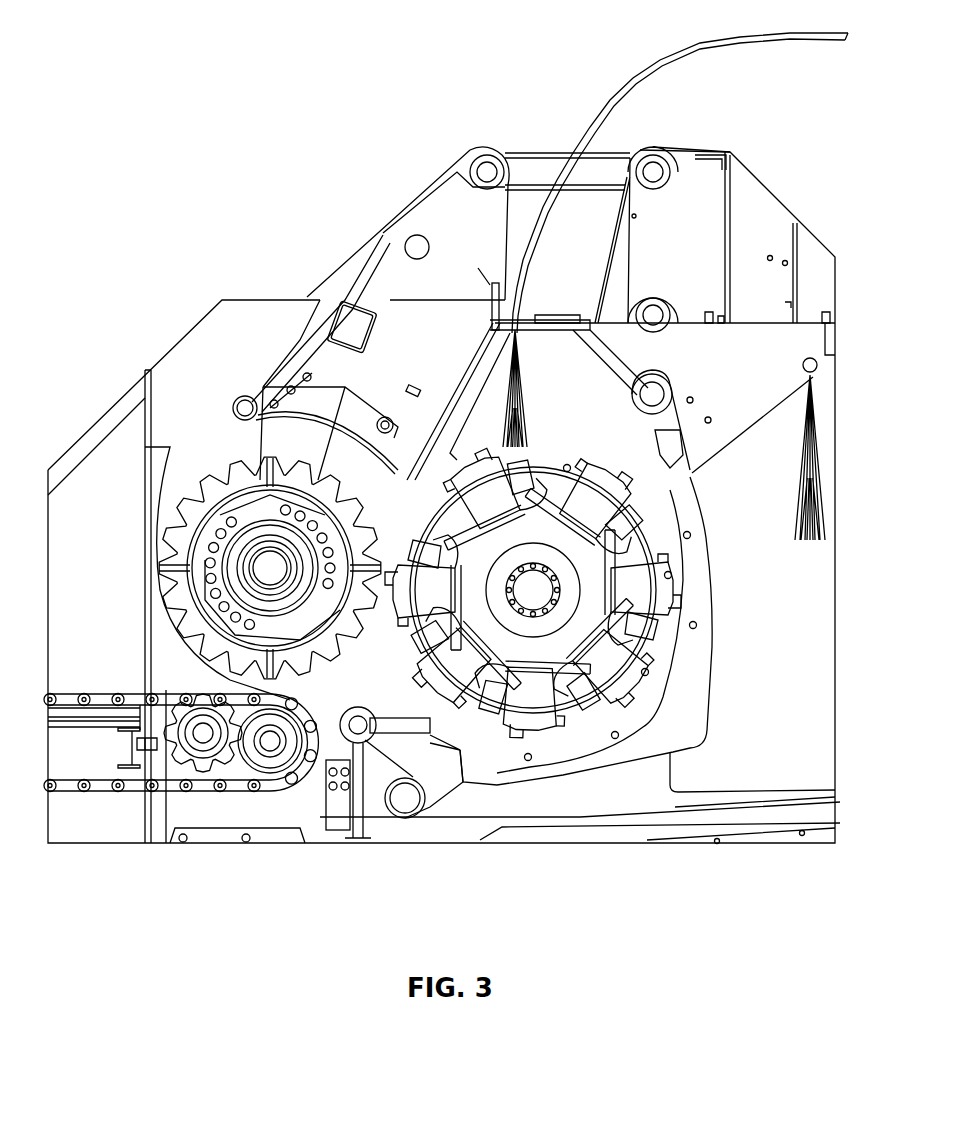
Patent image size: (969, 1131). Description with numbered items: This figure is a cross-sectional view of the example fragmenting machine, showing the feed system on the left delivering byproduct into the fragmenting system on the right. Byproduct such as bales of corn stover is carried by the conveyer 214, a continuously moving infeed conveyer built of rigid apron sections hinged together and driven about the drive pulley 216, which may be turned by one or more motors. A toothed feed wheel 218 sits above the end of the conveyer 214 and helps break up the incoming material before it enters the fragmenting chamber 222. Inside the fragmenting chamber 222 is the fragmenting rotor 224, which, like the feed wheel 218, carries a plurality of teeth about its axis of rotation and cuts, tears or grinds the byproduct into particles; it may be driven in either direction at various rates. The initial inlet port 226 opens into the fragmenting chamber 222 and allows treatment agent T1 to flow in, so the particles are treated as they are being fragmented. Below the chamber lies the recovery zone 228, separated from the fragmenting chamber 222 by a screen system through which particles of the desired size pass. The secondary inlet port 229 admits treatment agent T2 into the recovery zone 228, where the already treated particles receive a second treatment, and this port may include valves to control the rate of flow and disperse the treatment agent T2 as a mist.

The conveyer 214 is at (102, 790).
The drive pulley 216 is at (273, 777).
The feed wheel 218 is at (300, 665).
The fragmenting chamber 222 is at (294, 581).
The fragmenting rotor 224 is at (527, 660).
The initial inlet port 226 is at (510, 325).
The recovery zone 228 is at (800, 742).
The secondary inlet port 229 is at (817, 362).
The treatment agent T1 is at (522, 398).
The treatment agent T2 is at (822, 438).